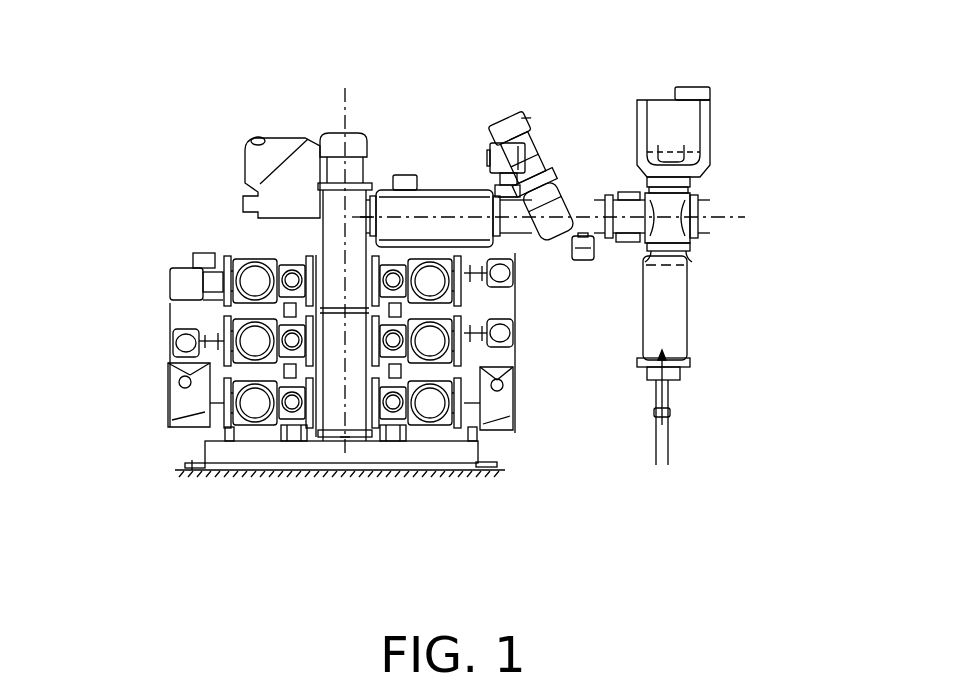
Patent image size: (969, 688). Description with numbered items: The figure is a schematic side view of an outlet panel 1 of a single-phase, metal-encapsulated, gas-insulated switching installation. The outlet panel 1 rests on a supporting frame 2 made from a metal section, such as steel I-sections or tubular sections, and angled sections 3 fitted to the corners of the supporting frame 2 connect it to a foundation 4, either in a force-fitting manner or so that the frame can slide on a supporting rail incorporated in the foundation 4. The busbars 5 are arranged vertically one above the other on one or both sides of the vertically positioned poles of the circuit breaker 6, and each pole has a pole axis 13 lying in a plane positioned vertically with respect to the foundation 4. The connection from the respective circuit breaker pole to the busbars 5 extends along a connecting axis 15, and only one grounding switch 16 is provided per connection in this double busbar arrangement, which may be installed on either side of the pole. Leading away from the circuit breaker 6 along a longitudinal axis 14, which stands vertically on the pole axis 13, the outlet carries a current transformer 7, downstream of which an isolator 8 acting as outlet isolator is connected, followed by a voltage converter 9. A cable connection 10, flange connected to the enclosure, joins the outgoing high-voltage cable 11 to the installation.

The outlet panel 1 is at (216, 212).
The supporting frame 2 is at (205, 452).
The angled sections 3 is at (135, 402).
The foundation 4 is at (223, 475).
The busbars 5 is at (257, 405).
The circuit breaker 6 is at (363, 447).
The current transformer 7 is at (431, 210).
The isolator 8 is at (543, 180).
The voltage converter 9 is at (692, 138).
The cable connection 10 is at (668, 308).
The high-voltage cable 11 is at (668, 450).
The pole axis 13 is at (345, 108).
The longitudinal axis 14 is at (730, 215).
The connecting axis 15 is at (133, 402).
The grounding switch 16 is at (293, 432).